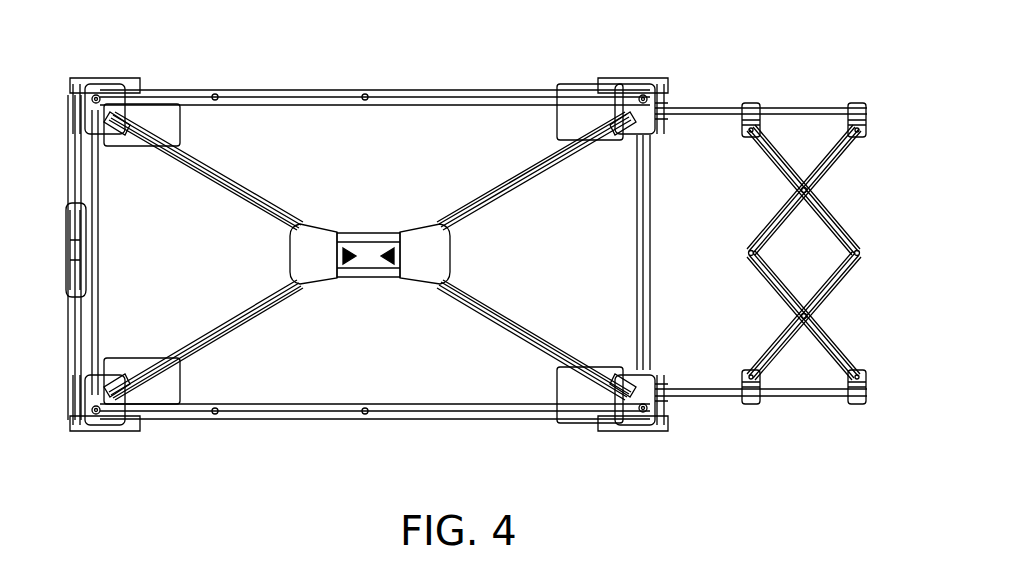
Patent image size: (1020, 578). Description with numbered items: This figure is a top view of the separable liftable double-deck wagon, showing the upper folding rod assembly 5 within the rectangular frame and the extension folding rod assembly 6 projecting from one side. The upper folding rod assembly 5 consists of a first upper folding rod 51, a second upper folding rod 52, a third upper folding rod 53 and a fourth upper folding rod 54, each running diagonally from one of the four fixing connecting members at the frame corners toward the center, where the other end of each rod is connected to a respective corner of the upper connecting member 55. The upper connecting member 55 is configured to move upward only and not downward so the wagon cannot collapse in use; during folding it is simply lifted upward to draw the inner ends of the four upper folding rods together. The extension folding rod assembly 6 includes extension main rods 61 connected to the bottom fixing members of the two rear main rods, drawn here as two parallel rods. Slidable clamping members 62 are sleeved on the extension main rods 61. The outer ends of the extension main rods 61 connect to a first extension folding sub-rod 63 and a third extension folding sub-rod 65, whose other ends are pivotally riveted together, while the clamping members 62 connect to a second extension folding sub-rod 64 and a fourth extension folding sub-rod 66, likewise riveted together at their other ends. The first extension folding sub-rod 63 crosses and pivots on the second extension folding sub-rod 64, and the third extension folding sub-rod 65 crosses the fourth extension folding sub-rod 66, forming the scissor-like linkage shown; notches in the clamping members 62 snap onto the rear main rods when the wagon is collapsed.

The upper folding rod assembly 5 is at (334, 194).
The first upper folding rod 51 is at (269, 198).
The second upper folding rod 52 is at (469, 198).
The third upper folding rod 53 is at (269, 312).
The fourth upper folding rod 54 is at (469, 312).
The upper connecting member 55 is at (369, 258).
The extension folding rod assembly 6 is at (808, 248).
The extension main rod 61 is at (778, 112).
The slidable clamping member 62 is at (748, 402).
The first extension folding sub-rod 63 is at (770, 157).
The second extension folding sub-rod 64 is at (840, 157).
The third extension folding sub-rod 65 is at (770, 352).
The fourth extension folding sub-rod 66 is at (840, 350).